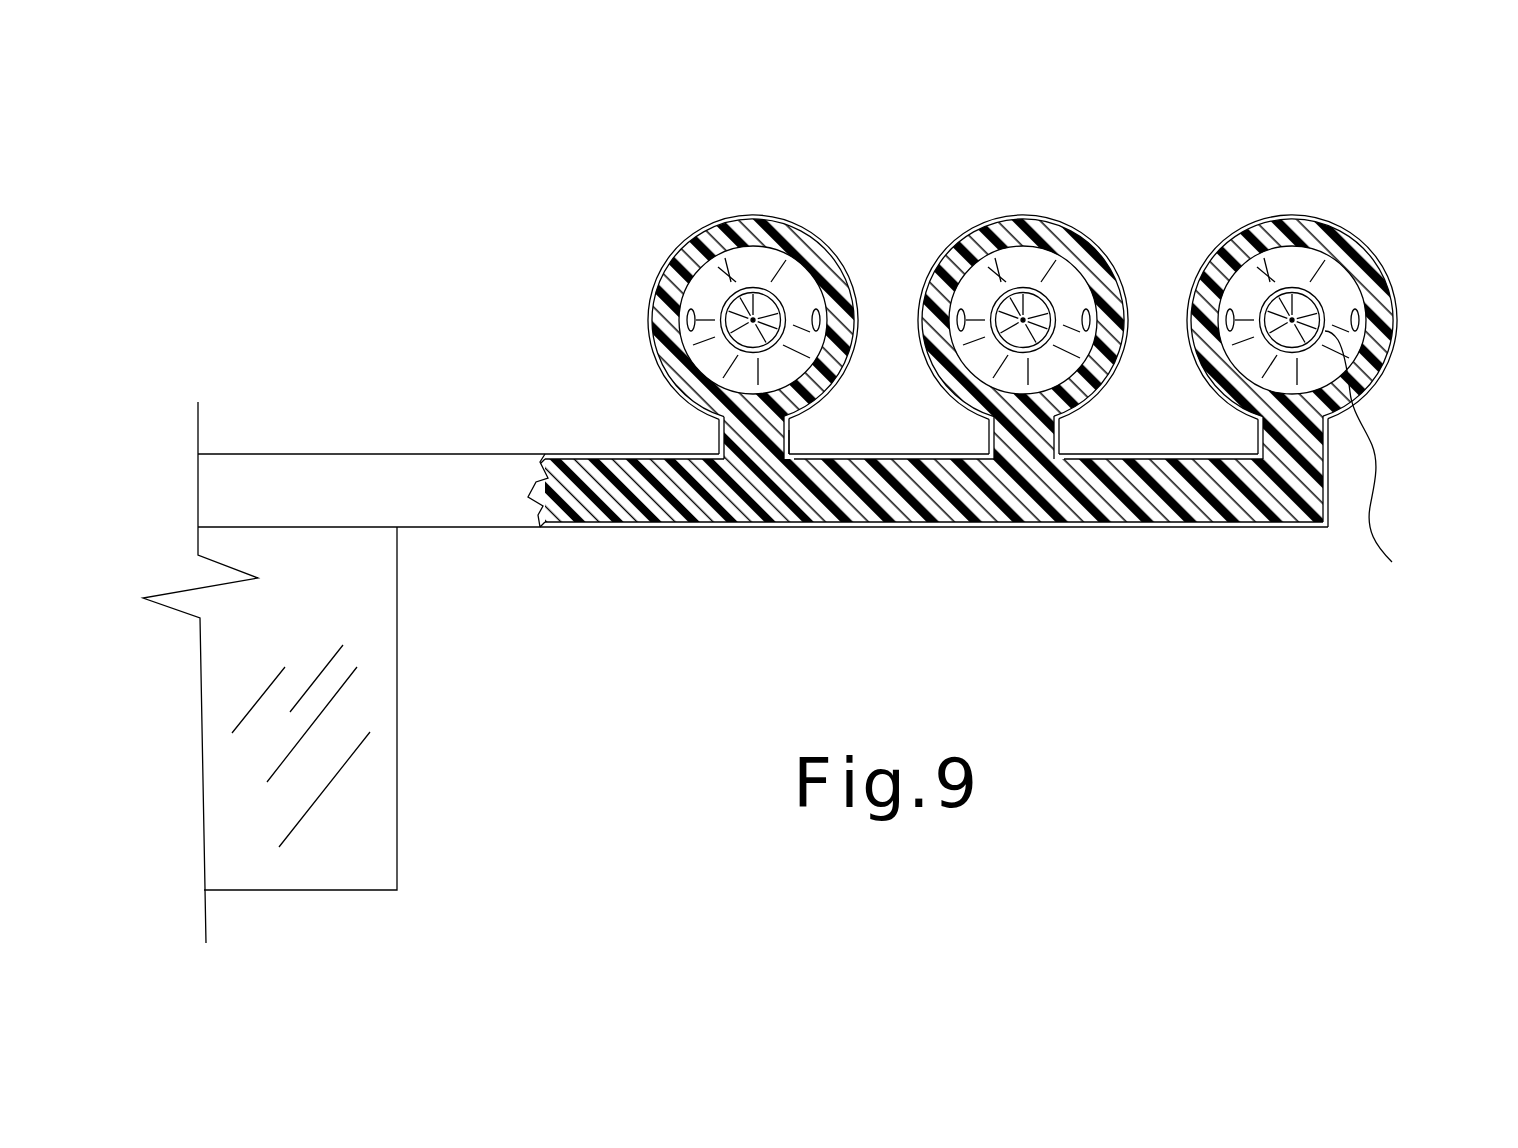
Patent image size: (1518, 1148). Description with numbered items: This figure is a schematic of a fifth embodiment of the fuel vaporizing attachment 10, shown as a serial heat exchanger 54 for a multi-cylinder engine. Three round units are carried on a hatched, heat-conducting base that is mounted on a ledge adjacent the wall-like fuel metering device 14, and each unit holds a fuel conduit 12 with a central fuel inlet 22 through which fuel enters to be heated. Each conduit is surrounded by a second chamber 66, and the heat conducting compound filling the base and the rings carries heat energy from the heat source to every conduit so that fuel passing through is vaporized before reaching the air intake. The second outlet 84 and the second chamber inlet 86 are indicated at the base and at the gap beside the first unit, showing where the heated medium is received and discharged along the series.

The fuel vaporizing attachment 10 is at (902, 213).
The fuel conduit 12 is at (1361, 391).
The fuel metering device 14 is at (251, 791).
The fuel inlet 22 is at (720, 301).
The serial heat exchanger 54 is at (1078, 193).
The second chamber 66 is at (1370, 465).
The second outlet 84 is at (368, 452).
The second chamber inlet 86 is at (798, 422).